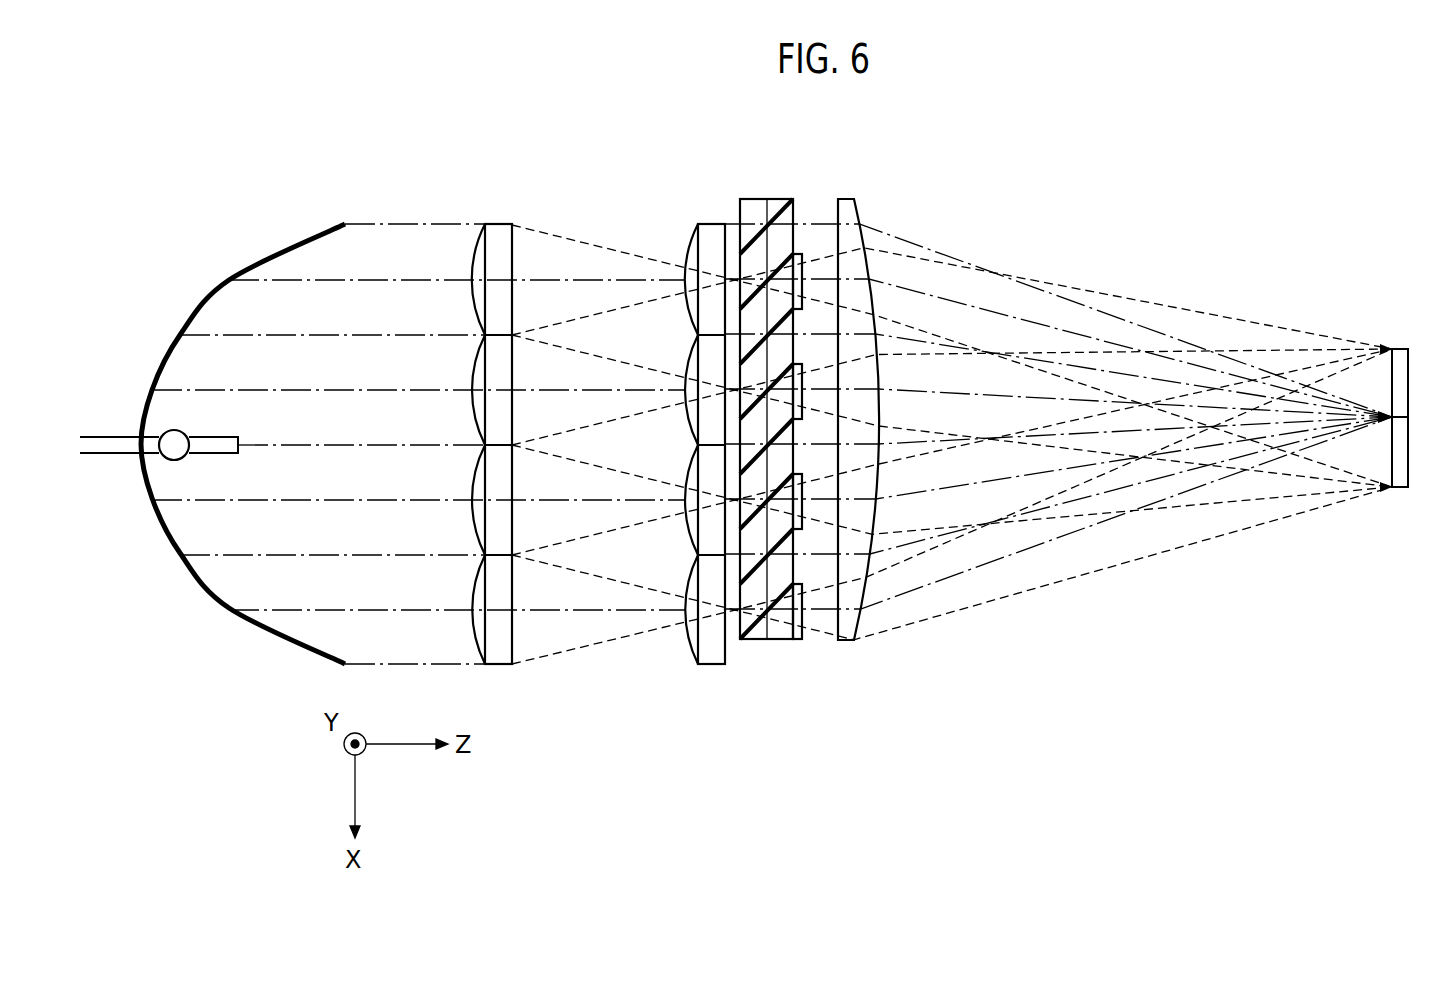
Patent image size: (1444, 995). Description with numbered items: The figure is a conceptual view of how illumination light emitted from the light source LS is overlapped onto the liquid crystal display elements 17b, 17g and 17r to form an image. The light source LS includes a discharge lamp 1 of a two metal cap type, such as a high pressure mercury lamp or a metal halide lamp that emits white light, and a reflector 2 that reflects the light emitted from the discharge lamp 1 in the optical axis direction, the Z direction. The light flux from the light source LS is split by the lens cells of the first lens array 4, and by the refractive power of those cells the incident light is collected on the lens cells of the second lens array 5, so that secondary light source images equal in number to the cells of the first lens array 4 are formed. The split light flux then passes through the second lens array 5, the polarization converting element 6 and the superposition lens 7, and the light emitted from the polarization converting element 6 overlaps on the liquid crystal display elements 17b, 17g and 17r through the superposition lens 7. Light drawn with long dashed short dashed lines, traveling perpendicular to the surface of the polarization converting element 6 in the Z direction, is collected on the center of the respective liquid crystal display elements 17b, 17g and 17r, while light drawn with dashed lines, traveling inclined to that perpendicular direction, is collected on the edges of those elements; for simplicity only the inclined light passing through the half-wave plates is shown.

The light source LS is at (212, 432).
The discharge lamp 1 is at (168, 458).
The reflector 2 is at (212, 598).
The first lens array 4 is at (500, 223).
The second lens array 5 is at (712, 223).
The polarization converting element 6 is at (771, 198).
The superposition lens 7 is at (848, 198).
The liquid crystal display element 17r is at (1365, 383).
The liquid crystal display element 17g is at (1365, 383).
The liquid crystal display element 17b is at (1405, 349).